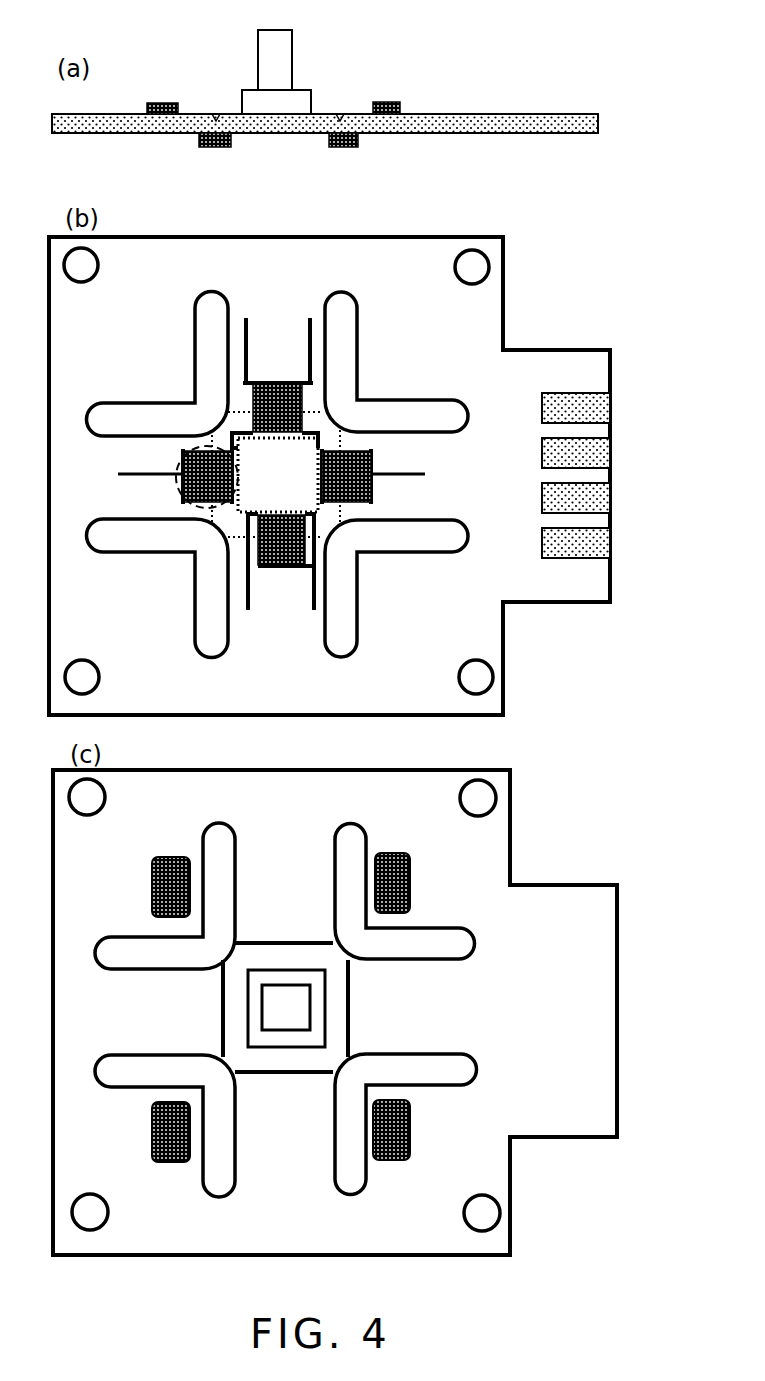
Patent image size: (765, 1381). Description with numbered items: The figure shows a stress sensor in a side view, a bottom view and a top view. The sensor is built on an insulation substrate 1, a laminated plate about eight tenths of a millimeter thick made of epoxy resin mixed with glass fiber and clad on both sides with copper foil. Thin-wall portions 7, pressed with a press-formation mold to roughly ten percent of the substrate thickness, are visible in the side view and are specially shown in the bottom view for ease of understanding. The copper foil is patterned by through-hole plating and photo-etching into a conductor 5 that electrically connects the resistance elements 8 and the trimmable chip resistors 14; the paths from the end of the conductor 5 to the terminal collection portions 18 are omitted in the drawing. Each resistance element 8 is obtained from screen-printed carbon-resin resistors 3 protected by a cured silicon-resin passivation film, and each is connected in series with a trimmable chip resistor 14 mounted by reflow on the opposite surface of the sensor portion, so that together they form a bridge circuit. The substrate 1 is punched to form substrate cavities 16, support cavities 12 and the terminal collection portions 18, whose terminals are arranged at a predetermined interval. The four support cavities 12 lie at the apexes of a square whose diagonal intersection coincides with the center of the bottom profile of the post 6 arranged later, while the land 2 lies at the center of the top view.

The insulation substrate 1 is at (420, 113).
The inner land 2 is at (273, 1010).
The resistors 3 is at (282, 568).
The conductor 5 is at (418, 466).
The post 6 is at (272, 42).
The thin-wall portions 7 is at (217, 115).
The resistance elements 8 is at (355, 143).
The support cavities 12 is at (467, 267).
The trimmable chip resistors 14 is at (377, 100).
The substrate cavities 16 is at (418, 412).
The terminal collection portions 18 is at (583, 402).